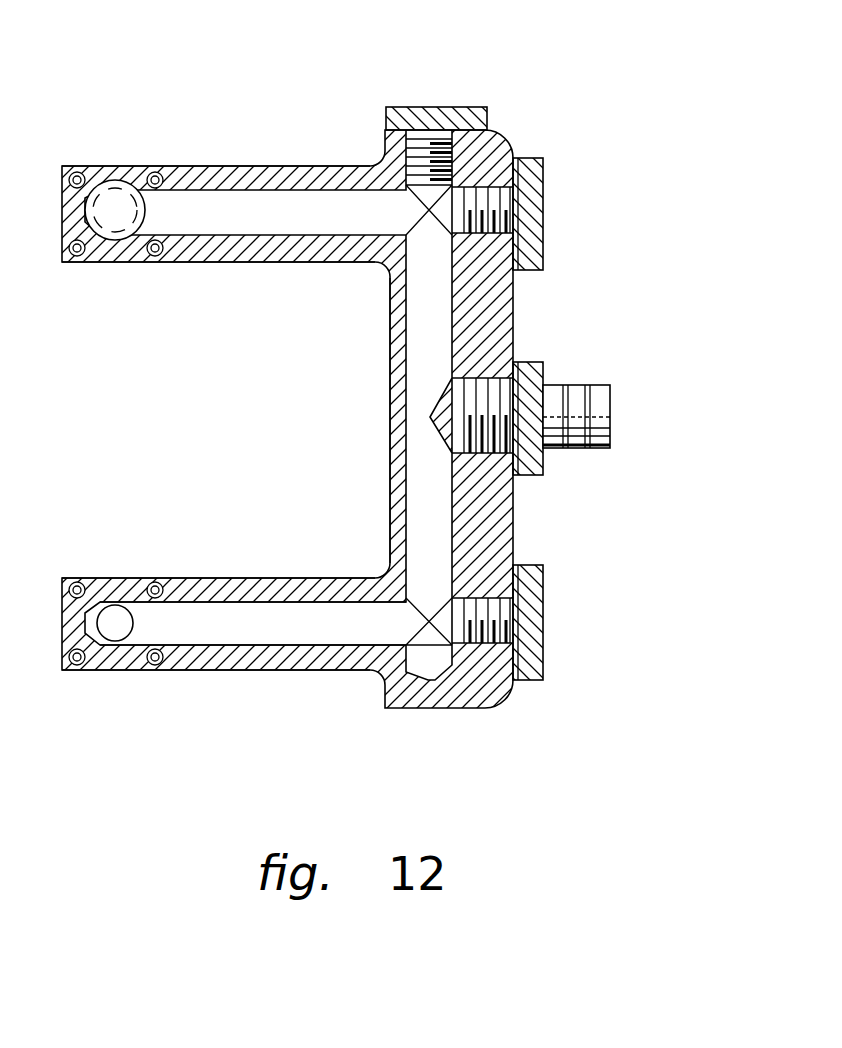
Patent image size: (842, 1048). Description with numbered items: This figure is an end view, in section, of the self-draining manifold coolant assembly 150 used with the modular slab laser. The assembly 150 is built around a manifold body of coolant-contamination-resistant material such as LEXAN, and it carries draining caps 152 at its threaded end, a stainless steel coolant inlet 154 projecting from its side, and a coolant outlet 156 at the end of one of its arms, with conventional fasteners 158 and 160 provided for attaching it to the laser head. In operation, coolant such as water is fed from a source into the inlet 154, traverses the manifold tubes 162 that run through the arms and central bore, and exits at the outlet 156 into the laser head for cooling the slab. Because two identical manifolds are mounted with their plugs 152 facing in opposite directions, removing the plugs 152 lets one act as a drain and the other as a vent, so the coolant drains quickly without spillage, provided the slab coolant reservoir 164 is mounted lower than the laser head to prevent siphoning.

The self-draining manifold coolant assembly 150 is at (512, 100).
The draining caps 152 is at (398, 107).
The coolant inlet 154 is at (612, 430).
The coolant outlet 156 is at (108, 622).
The conventional fasteners 158 is at (158, 670).
The conventional fasteners 160 is at (155, 172).
The manifold tubes 162 is at (268, 222).
The slab coolant reservoir 164 is at (255, 613).